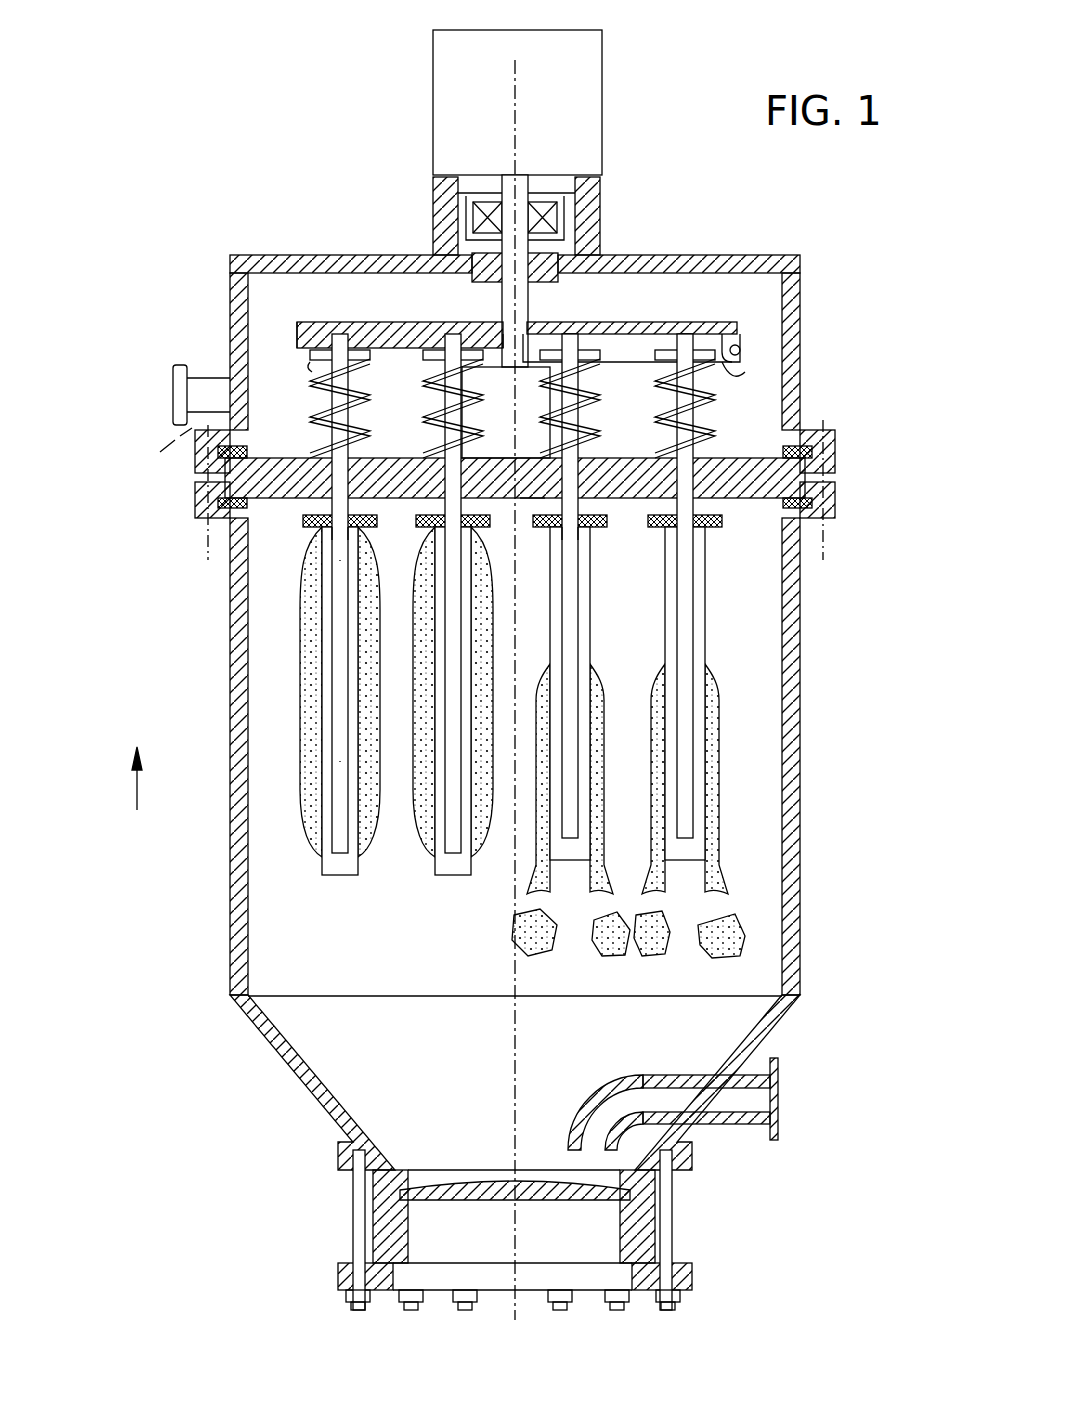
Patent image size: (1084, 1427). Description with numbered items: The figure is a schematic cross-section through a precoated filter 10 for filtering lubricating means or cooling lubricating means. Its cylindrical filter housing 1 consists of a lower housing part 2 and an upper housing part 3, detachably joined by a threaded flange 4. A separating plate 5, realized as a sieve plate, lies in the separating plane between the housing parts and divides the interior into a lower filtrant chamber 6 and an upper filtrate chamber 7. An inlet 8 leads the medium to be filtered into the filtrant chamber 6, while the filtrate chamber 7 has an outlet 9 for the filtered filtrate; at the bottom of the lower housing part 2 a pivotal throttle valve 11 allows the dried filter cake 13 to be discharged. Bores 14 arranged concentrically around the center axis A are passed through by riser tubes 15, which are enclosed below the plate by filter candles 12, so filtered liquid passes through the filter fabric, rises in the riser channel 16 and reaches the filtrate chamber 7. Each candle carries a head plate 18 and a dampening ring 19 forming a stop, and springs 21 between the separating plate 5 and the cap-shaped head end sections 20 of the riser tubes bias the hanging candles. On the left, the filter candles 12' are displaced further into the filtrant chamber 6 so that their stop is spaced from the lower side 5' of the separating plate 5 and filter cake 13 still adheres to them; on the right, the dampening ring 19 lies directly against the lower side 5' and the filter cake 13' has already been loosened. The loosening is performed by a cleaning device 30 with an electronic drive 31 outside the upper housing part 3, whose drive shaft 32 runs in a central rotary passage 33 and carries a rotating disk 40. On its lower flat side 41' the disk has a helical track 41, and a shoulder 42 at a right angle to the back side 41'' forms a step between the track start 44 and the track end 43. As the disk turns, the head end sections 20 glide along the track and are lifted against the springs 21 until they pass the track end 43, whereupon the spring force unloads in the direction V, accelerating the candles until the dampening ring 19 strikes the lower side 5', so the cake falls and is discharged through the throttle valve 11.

The filter housing 1 is at (479, 660).
The lower housing part 2 is at (237, 773).
The upper housing part 3 is at (232, 305).
The threaded flange 4 is at (207, 529).
The separating plate 5 is at (784, 493).
The lower side of the separating plate 5' is at (531, 532).
The filtrant chamber 6 is at (357, 975).
The filtrate chamber 7 is at (729, 315).
The inlet 8 is at (778, 1076).
The outlet 9 is at (181, 380).
The precoated filter 10 is at (503, 660).
The pivotal throttle valve 11 is at (456, 1192).
The filter candles 12 is at (659, 693).
The filter candles 12' is at (414, 726).
The filter cake 13 is at (381, 692).
The loosened filter cake 13' is at (647, 811).
The bores 14 is at (731, 472).
The riser tubes 15 is at (332, 652).
The riser channel 16 is at (340, 696).
The head plate 18 is at (313, 531).
The dampening ring 19 is at (306, 521).
The cap-shaped head end sections 20 is at (312, 372).
The springs 21 is at (315, 409).
The cleaning device 30 is at (517, 675).
The electronic drive 31 is at (588, 72).
The drive shaft 32 is at (558, 262).
The rotary passage 33 is at (595, 196).
The rotating disk 40 is at (392, 333).
The helical track 41 is at (512, 397).
The lower flat side of the disk 41' is at (300, 314).
The back side of the disk 41'' is at (461, 316).
The shoulder 42 is at (740, 348).
The track end 43 is at (745, 372).
The track start 44 is at (742, 358).
The center axis A is at (515, 130).
The direction of arrow V is at (137, 796).